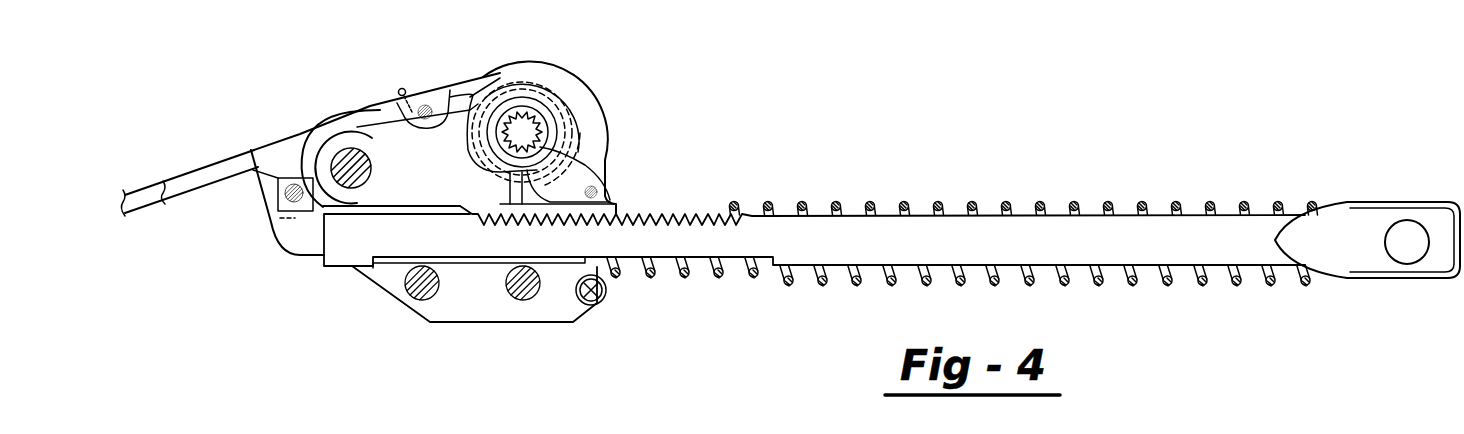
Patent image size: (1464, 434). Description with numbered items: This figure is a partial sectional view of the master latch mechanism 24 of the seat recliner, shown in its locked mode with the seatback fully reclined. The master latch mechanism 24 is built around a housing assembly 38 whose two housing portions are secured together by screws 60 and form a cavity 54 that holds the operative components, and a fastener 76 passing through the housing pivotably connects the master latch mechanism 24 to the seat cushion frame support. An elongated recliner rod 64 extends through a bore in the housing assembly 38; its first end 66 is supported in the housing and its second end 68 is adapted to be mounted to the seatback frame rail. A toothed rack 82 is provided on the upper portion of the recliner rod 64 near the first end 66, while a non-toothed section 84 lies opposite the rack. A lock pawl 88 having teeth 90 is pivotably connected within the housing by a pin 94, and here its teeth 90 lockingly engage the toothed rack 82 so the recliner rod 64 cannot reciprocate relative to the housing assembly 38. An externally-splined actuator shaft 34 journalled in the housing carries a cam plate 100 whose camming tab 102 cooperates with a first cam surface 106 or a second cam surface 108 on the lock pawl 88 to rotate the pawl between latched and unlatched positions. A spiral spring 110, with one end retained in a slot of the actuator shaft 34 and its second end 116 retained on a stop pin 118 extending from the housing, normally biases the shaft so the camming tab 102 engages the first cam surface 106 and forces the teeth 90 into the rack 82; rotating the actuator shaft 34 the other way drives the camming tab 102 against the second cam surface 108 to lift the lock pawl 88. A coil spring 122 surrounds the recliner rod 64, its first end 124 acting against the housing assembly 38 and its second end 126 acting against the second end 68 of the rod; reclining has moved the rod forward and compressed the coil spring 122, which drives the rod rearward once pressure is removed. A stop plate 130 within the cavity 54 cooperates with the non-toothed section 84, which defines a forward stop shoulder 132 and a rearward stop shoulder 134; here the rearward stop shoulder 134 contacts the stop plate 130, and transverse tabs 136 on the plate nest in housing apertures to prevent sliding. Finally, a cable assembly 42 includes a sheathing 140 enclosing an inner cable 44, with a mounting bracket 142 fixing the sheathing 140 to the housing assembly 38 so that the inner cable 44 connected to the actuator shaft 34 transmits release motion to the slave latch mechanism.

The master latch mechanism 24 is at (590, 72).
The actuator shaft 34 is at (545, 133).
The housing assembly 38 is at (505, 335).
The cable assembly 42 is at (175, 165).
The inner cable 44 is at (152, 204).
The cavity 54 is at (370, 125).
The screws 60 is at (597, 305).
The recliner rod 64 is at (818, 213).
The first end 66 is at (343, 238).
The second end 68 is at (1325, 222).
The fastener 76 is at (506, 283).
The toothed rack 82 is at (714, 213).
The non-toothed section 84 is at (703, 270).
The lock pawl 88 is at (383, 147).
The teeth 90 is at (390, 193).
The pin 94 is at (308, 168).
The cam plate 100 is at (523, 93).
The camming tab 102 is at (373, 168).
The first cam surface 106 is at (568, 160).
The second cam surface 108 is at (482, 128).
The spiral spring 110 is at (600, 130).
The second end 116 is at (402, 88).
The stop pin 118 is at (425, 105).
The coil spring 122 is at (1018, 195).
The first end 124 is at (615, 207).
The second end 126 is at (1310, 205).
The stop plate 130 is at (433, 323).
The forward stop shoulder 132 is at (380, 277).
The rearward stop shoulder 134 is at (770, 262).
The transverse tabs 136 is at (381, 270).
The sheathing 140 is at (200, 183).
The mounting bracket 142 is at (262, 157).